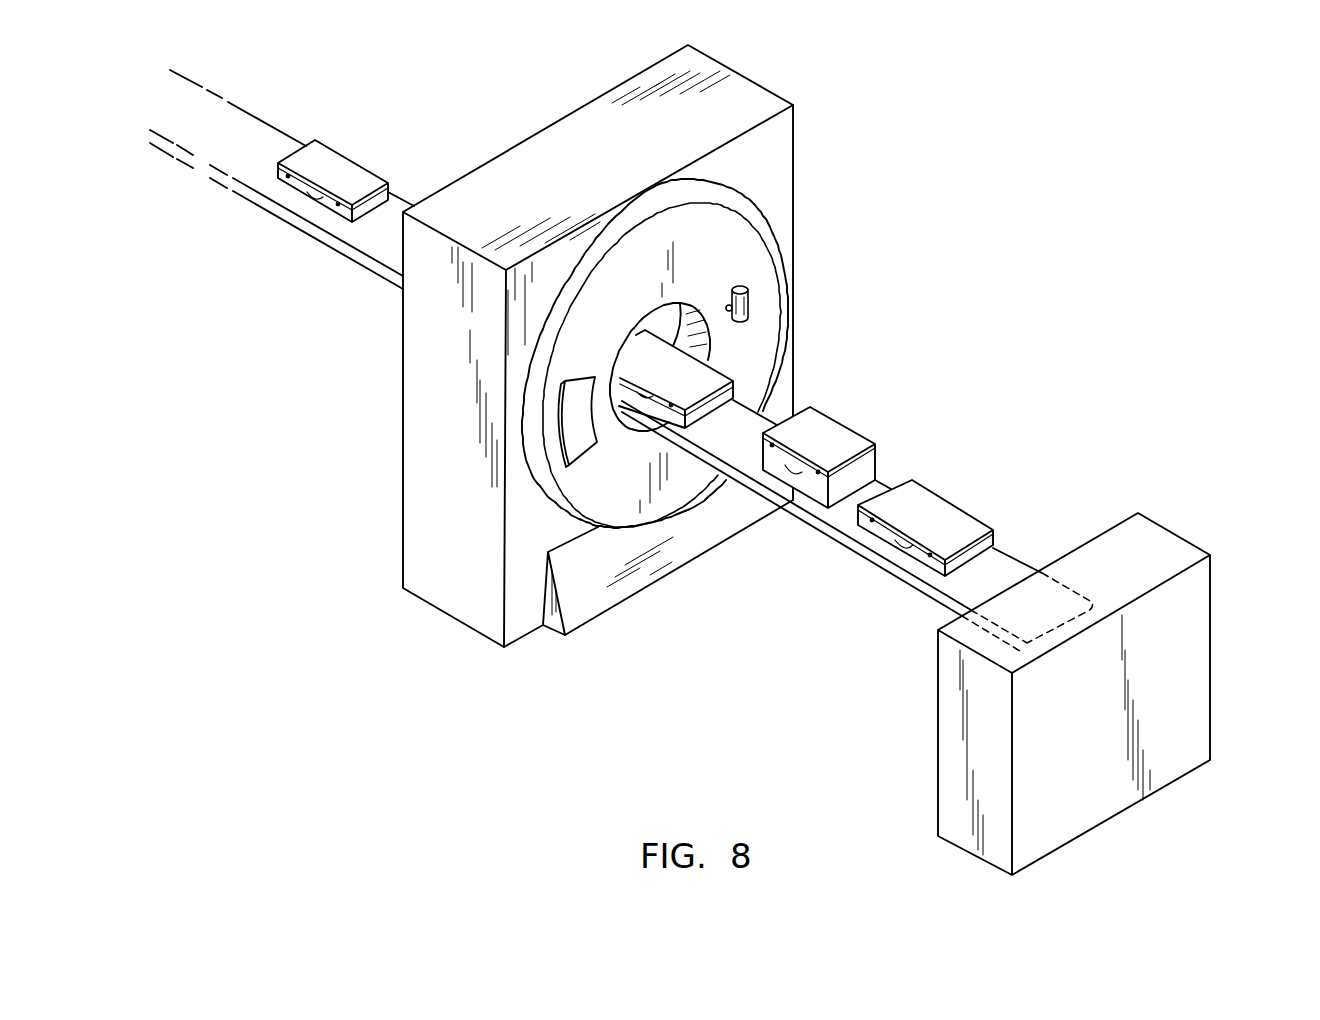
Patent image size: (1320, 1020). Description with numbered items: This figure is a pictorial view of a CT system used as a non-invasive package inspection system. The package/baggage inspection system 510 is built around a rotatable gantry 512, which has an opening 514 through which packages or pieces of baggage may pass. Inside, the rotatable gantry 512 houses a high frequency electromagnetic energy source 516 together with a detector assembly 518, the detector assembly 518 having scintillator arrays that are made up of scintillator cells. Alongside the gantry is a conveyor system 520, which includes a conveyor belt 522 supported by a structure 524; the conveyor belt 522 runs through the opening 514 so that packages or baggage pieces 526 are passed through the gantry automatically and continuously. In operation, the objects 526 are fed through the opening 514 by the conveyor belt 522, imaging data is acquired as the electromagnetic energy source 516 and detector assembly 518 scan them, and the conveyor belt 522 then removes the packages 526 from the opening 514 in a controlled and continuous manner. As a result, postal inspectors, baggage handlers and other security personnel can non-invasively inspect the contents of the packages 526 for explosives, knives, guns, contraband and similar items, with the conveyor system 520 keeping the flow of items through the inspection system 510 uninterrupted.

The package/baggage inspection system 510 is at (744, 346).
The rotatable gantry 512 is at (733, 251).
The opening 514 is at (693, 302).
The high frequency electromagnetic energy source 516 is at (750, 307).
The detector assembly 518 is at (585, 392).
The conveyor system 520 is at (717, 472).
The conveyor belt 522 is at (375, 240).
The structure 524 is at (1197, 650).
The packages or baggage pieces 526 is at (343, 167).